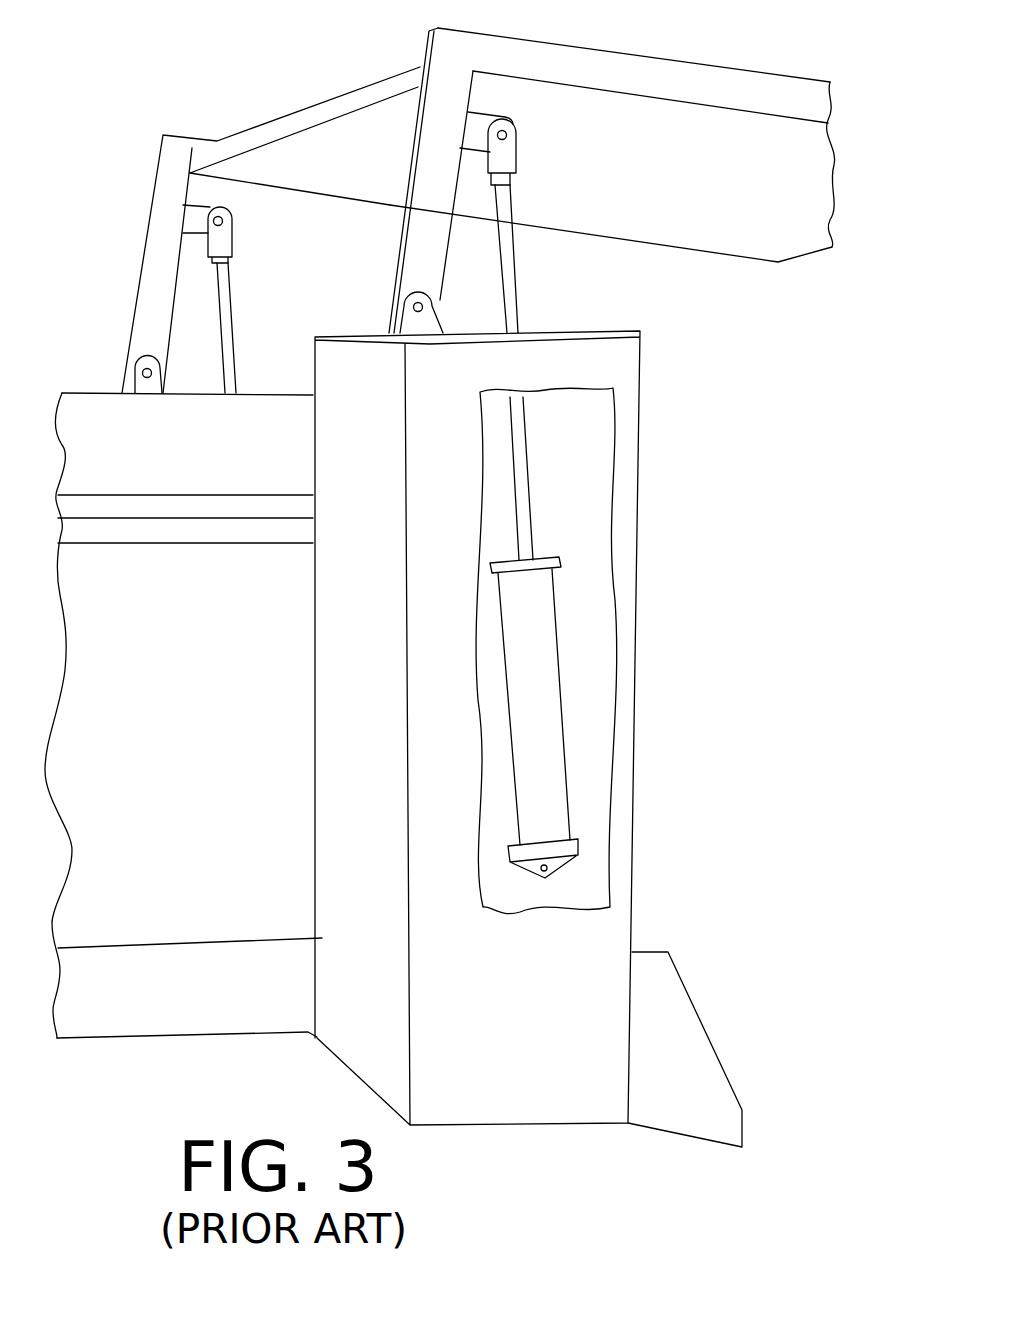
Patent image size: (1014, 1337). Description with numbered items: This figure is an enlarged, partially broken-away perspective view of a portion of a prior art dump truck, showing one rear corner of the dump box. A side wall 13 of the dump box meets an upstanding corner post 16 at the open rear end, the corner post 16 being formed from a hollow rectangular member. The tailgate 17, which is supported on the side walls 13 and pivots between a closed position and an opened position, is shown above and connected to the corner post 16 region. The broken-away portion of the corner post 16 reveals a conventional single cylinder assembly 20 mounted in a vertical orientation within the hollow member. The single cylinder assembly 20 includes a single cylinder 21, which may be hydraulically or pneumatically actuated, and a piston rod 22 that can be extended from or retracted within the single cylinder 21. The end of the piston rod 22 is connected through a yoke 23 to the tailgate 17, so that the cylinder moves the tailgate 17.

The side wall 13 is at (182, 742).
The corner post 16 is at (518, 1055).
The tailgate 17 is at (700, 189).
The single cylinder assembly 20 is at (615, 651).
The single cylinder 21 is at (525, 682).
The piston rod 22 is at (518, 465).
The yoke 23 is at (502, 153).